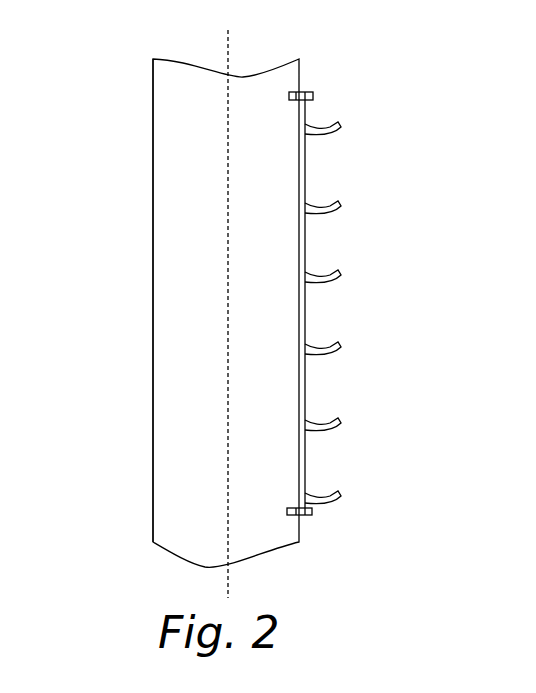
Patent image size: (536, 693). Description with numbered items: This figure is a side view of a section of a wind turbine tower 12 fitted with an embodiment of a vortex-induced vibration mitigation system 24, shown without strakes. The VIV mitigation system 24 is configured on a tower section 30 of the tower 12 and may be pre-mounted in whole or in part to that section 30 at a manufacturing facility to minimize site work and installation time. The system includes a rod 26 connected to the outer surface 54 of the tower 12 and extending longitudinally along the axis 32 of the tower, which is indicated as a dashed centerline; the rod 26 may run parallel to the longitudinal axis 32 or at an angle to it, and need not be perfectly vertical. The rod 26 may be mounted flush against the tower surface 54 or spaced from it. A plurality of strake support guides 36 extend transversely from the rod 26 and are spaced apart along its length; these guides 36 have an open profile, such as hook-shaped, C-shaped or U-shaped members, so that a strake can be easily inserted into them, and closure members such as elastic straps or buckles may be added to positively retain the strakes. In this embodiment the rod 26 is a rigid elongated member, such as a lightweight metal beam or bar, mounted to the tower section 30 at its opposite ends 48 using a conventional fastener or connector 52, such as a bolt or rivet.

The tower 12 is at (110, 143).
The VIV mitigation system 24 is at (378, 230).
The rod 26 is at (305, 318).
The tower section 30 is at (170, 427).
The longitudinal axis 32 is at (230, 53).
The strake support guide 36 is at (325, 356).
The rod end 48 is at (303, 92).
The fastener 52 is at (289, 96).
The outer surface 54 is at (163, 292).